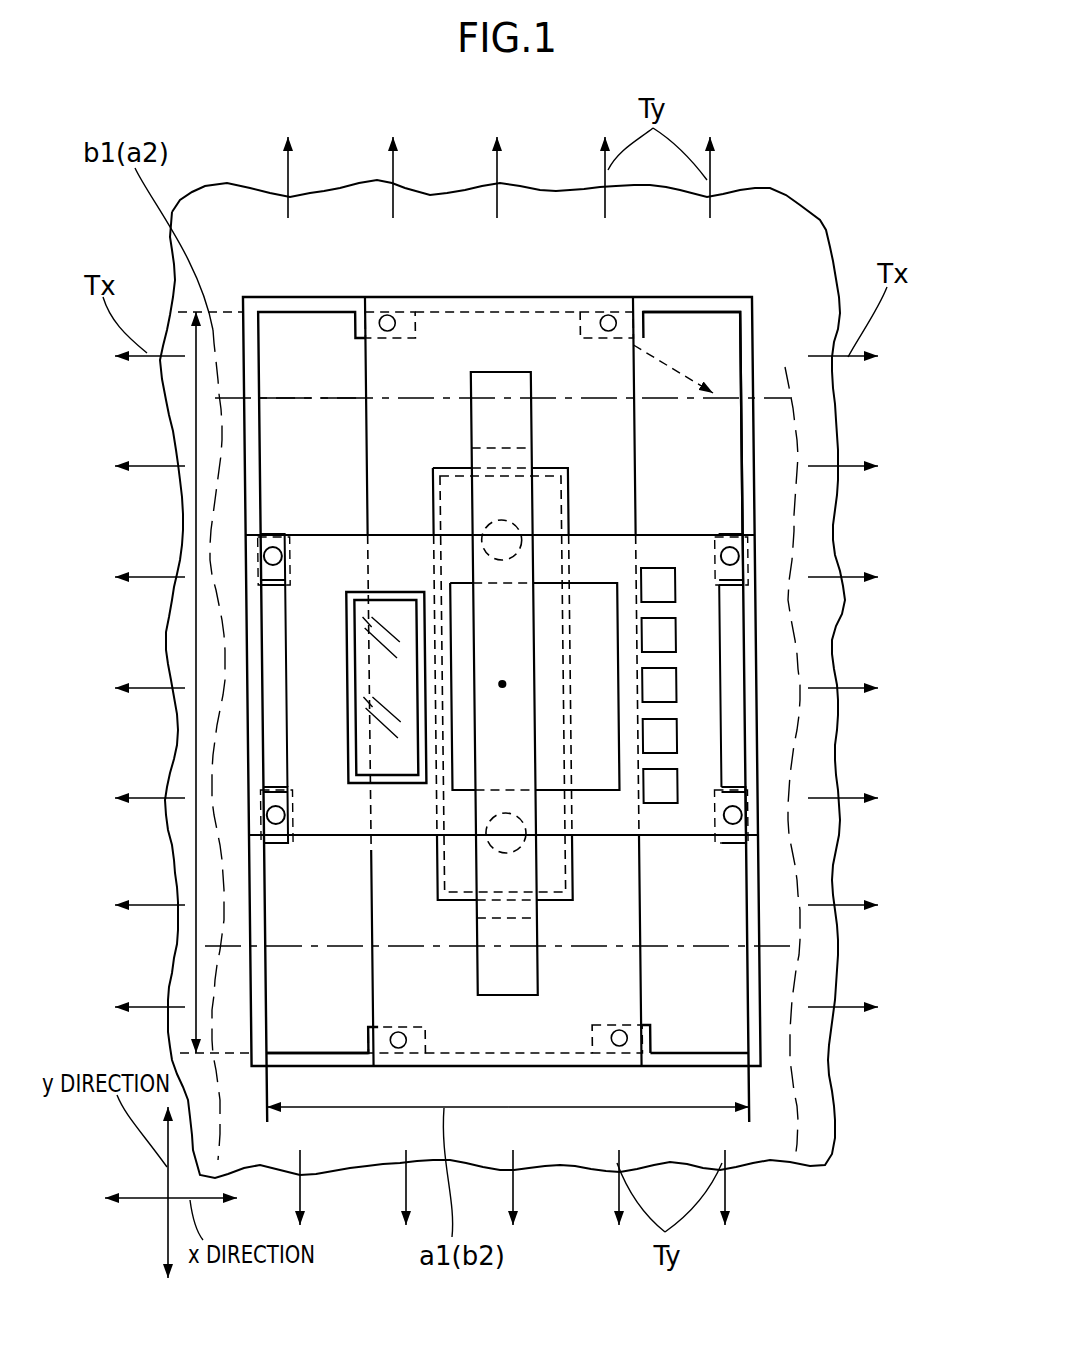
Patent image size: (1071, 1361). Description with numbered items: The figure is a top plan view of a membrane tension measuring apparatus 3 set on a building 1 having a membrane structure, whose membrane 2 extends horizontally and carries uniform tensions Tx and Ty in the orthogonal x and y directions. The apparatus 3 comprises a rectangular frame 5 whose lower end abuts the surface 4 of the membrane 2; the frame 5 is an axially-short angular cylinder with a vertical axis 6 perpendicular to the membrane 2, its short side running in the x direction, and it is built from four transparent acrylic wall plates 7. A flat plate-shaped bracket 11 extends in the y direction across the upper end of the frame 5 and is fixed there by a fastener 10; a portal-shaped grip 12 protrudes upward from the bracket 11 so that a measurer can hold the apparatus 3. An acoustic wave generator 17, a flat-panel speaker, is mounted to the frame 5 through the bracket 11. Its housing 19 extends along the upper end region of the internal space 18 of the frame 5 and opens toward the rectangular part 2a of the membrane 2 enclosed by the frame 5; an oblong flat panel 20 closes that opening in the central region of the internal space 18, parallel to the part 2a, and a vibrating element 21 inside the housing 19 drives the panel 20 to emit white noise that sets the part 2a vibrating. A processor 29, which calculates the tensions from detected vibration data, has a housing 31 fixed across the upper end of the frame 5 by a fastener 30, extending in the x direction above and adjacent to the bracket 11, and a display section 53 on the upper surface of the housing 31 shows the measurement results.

The building 1 is at (773, 180).
The membrane 2 is at (793, 253).
The part of the membrane 2a is at (687, 386).
The surface of the membrane 4 is at (710, 338).
The membrane tension measuring apparatus 3 is at (437, 392).
The frame 5 is at (332, 293).
The axis 6 is at (502, 690).
The wall plates 7 is at (312, 297).
The fastener 10 is at (608, 315).
The bracket 11 is at (397, 992).
The grip 12 is at (500, 380).
The acoustic wave generator 17 is at (575, 658).
The housing 19 is at (545, 467).
The internal space 18 is at (331, 461).
The flat panel 20 is at (570, 497).
The vibrating element 21 is at (503, 562).
The processor 29 is at (398, 834).
The fastener 30 is at (283, 550).
The housing 31 is at (332, 797).
The display section 53 is at (398, 610).